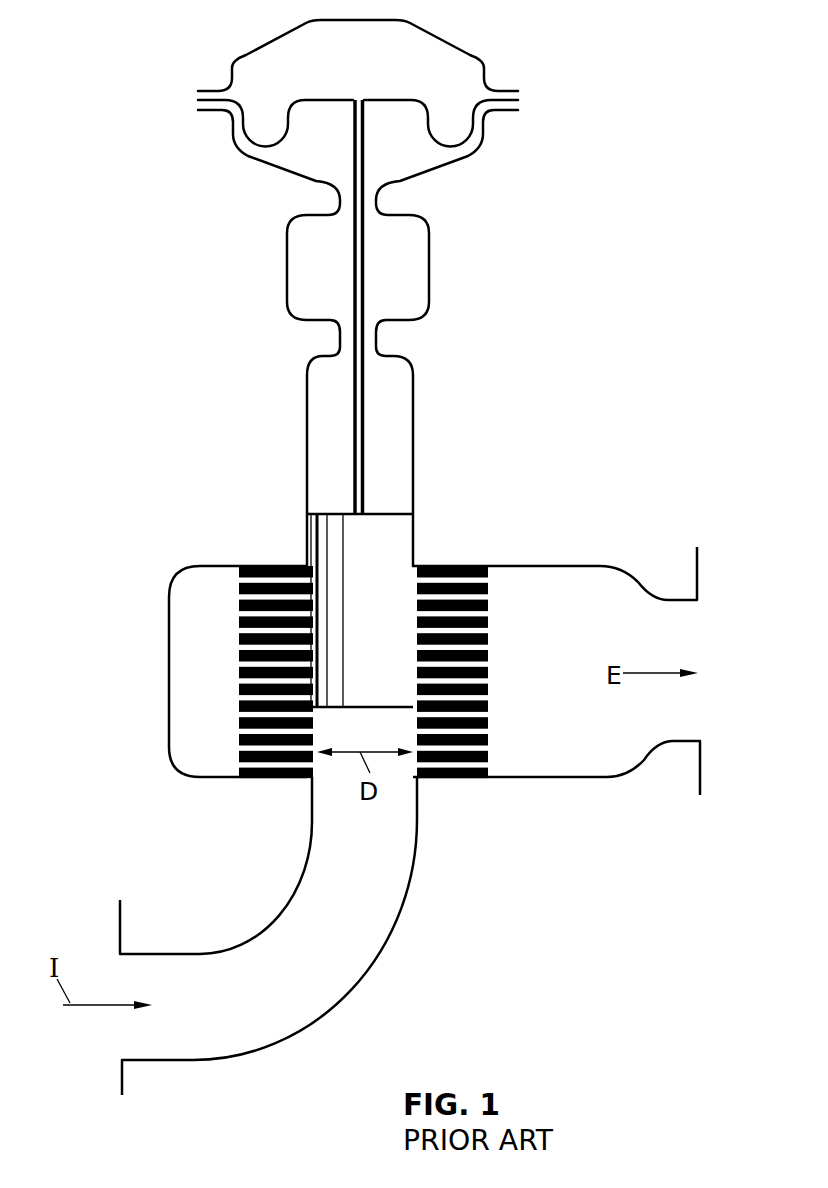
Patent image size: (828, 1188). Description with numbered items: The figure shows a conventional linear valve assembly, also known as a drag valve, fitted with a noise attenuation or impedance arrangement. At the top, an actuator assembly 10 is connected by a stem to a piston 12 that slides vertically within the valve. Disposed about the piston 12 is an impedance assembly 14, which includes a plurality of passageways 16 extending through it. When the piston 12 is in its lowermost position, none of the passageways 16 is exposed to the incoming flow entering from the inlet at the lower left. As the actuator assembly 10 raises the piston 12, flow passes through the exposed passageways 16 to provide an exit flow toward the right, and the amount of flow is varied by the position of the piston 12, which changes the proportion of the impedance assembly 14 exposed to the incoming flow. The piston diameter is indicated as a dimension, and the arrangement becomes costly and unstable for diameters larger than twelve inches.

The actuator assembly 10 is at (255, 321).
The piston 12 is at (388, 543).
The impedance assembly 14 is at (488, 653).
The passageways 16 is at (488, 725).